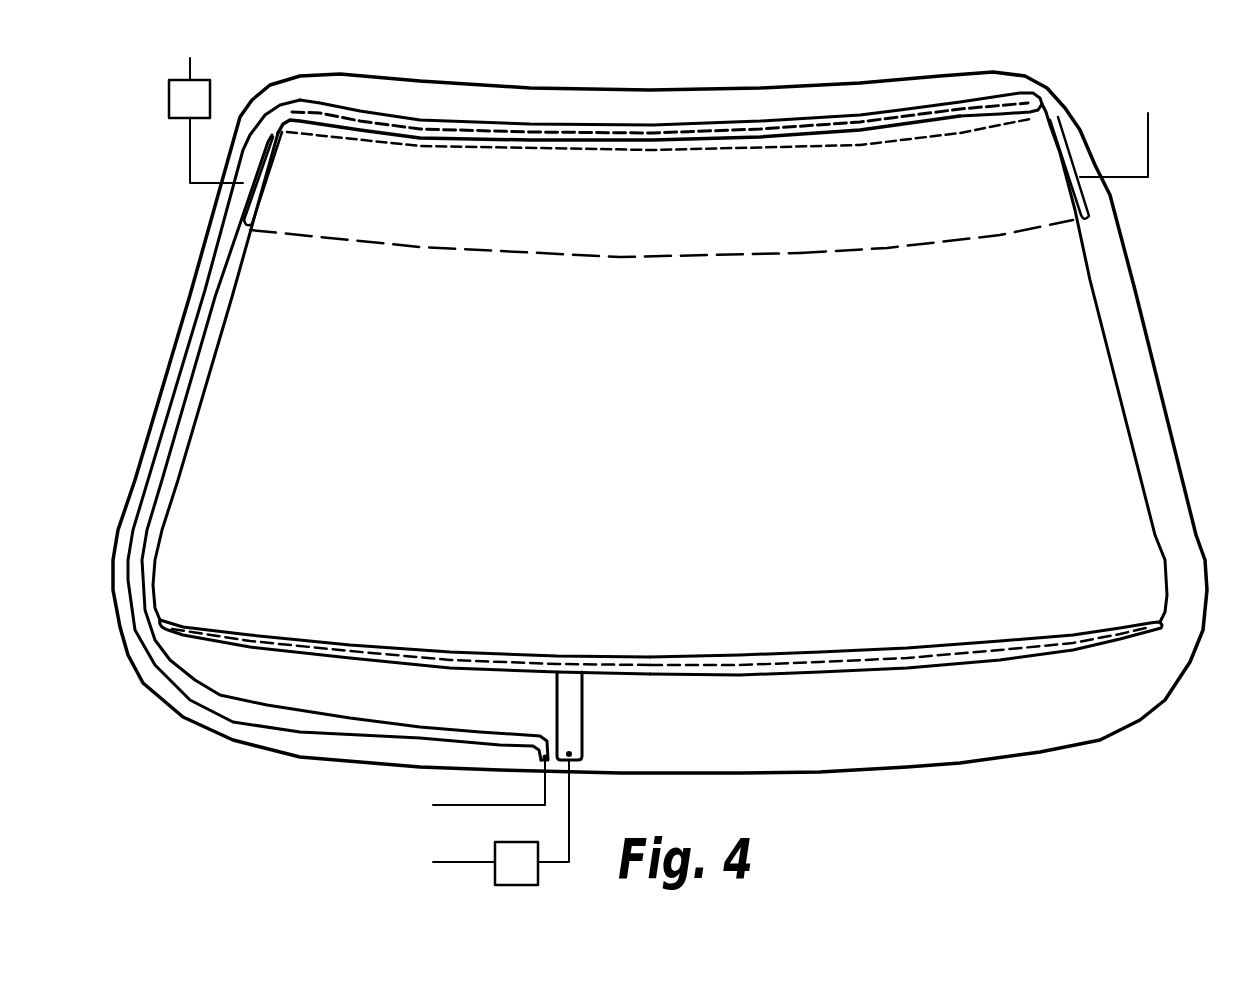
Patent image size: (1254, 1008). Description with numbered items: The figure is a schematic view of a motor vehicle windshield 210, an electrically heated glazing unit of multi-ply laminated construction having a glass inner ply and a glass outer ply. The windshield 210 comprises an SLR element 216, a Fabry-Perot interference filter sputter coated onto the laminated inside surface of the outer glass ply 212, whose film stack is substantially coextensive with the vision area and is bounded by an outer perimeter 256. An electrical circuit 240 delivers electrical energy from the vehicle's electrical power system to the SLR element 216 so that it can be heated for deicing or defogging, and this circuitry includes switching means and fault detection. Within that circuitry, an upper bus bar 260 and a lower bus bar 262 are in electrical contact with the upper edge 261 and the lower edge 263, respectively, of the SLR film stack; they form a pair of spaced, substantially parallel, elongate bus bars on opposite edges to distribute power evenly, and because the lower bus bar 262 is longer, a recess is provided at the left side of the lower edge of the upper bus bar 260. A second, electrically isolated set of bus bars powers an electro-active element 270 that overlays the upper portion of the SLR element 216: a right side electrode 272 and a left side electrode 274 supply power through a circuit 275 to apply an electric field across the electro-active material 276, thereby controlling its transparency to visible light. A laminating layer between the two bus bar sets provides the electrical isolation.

The motor vehicle windshield 210 is at (776, 86).
The outer glass ply 212 is at (1160, 440).
The SLR element 216 is at (1077, 277).
The electrical circuit 240 is at (583, 808).
The outer perimeter 256 is at (622, 132).
The upper bus bar 260 is at (875, 113).
The upper edge 261 is at (673, 134).
The lower bus bar 262 is at (538, 658).
The lower edge 263 is at (800, 667).
The electro-active element 270 is at (893, 232).
The right side electrode 272 is at (1112, 213).
The left side electrode 274 is at (270, 158).
The circuit 275 is at (189, 143).
The electro-active material 276 is at (611, 240).